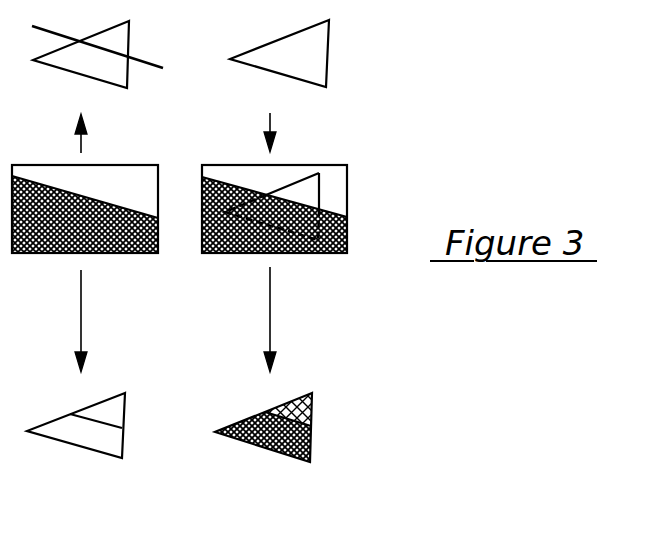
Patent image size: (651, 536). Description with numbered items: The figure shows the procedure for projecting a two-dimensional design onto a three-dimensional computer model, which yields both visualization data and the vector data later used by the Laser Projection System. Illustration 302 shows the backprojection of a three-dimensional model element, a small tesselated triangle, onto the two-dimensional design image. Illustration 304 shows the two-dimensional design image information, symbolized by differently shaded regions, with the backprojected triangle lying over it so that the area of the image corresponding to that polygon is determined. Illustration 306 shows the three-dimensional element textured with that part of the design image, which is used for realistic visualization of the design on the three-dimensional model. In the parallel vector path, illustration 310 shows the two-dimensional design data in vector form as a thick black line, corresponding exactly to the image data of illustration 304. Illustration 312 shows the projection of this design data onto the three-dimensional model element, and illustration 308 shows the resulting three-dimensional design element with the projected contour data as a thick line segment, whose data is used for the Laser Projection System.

The illustration of backprojection of 3D model element 302 is at (326, 76).
The illustration of 2D design image information 304 is at (305, 253).
The illustration of textured 3D element 306 is at (312, 450).
The illustration of 3D design element with 3D contour data 308 is at (123, 447).
The illustration of 2D design vector data 310 is at (113, 253).
The illustration of projection of 2D design data onto 3D model element 312 is at (128, 78).